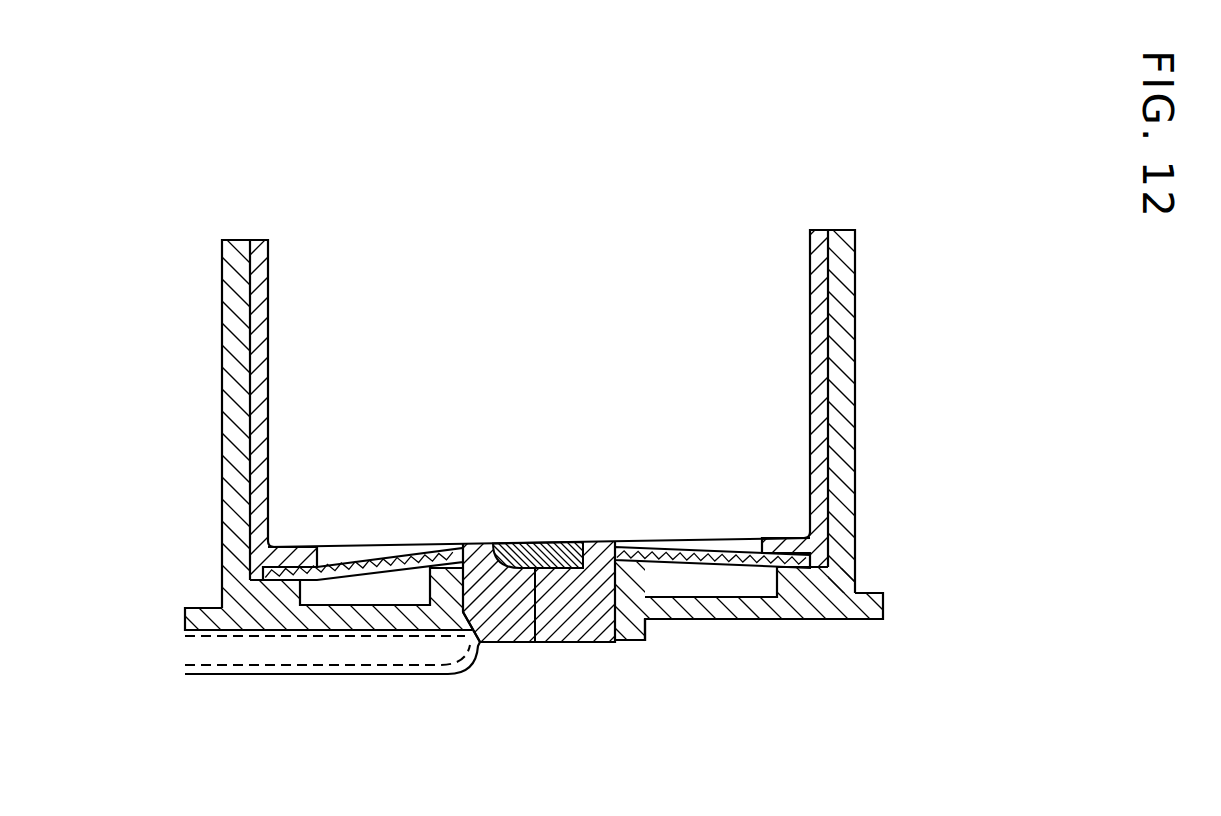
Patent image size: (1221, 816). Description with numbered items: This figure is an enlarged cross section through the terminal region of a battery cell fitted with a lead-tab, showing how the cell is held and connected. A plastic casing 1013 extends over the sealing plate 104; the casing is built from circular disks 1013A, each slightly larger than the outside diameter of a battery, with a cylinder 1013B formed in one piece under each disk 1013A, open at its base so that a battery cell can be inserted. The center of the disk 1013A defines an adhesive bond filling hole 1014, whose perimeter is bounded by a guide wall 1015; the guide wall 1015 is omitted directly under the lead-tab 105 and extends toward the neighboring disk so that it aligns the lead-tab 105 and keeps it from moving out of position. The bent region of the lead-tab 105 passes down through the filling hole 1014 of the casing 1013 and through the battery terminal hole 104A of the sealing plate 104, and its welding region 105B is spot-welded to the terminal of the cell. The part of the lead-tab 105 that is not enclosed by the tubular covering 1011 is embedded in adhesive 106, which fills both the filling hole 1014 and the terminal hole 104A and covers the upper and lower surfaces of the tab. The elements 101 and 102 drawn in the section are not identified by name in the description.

The speaker unit 101 is at (588, 265).
The liner 102 is at (262, 372).
The sealing plate 104 is at (717, 550).
The battery terminal hole 104A is at (595, 545).
The lead-tab 105 is at (258, 651).
The welding region 105B is at (535, 643).
The adhesive 106 is at (587, 628).
The tubular covering 1011 is at (350, 677).
The casing 1013 is at (845, 621).
The disk 1013A is at (740, 621).
The cylinder 1013B is at (237, 385).
The adhesive bond filling hole 1014 is at (497, 645).
The guide wall 1015 is at (633, 642).